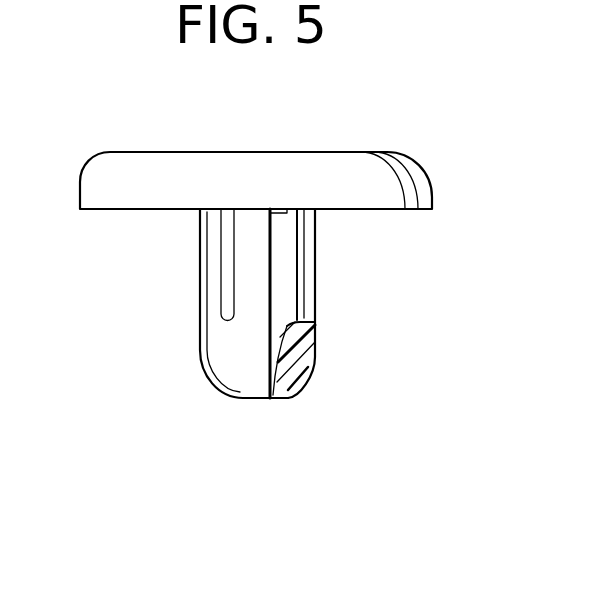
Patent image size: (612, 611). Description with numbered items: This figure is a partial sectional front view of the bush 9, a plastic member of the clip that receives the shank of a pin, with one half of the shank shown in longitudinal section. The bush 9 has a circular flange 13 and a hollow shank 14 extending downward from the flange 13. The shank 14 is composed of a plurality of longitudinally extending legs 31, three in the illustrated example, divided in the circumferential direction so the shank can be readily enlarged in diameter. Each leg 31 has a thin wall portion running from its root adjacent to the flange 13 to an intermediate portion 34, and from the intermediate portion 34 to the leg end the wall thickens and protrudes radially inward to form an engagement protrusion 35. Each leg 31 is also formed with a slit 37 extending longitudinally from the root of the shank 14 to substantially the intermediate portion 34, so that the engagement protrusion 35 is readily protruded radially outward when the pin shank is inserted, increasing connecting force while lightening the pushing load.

The bush 9 is at (294, 244).
The circular flange 13 is at (347, 157).
The shank of the bush 14 is at (288, 307).
The leg 31 is at (211, 302).
The intermediate portion 34 is at (300, 320).
The engagement protrusion 35 is at (295, 352).
The slit 37 is at (225, 249).